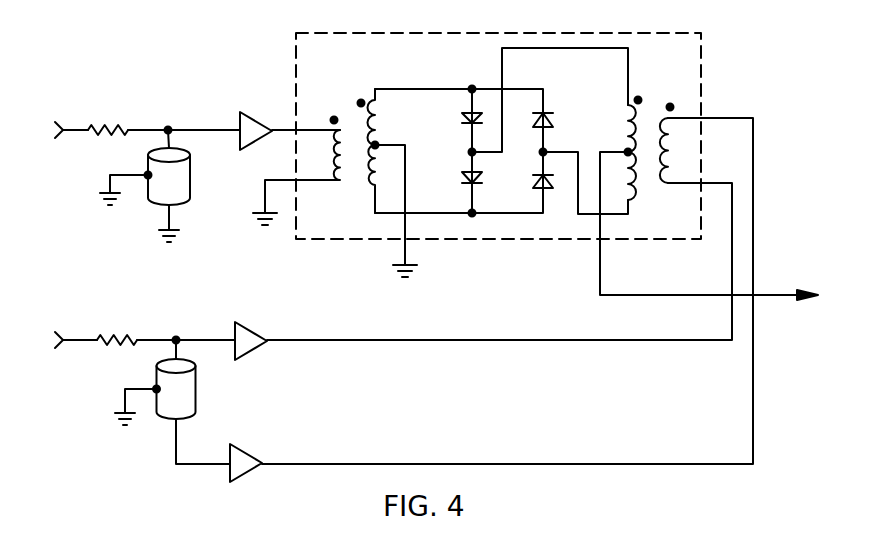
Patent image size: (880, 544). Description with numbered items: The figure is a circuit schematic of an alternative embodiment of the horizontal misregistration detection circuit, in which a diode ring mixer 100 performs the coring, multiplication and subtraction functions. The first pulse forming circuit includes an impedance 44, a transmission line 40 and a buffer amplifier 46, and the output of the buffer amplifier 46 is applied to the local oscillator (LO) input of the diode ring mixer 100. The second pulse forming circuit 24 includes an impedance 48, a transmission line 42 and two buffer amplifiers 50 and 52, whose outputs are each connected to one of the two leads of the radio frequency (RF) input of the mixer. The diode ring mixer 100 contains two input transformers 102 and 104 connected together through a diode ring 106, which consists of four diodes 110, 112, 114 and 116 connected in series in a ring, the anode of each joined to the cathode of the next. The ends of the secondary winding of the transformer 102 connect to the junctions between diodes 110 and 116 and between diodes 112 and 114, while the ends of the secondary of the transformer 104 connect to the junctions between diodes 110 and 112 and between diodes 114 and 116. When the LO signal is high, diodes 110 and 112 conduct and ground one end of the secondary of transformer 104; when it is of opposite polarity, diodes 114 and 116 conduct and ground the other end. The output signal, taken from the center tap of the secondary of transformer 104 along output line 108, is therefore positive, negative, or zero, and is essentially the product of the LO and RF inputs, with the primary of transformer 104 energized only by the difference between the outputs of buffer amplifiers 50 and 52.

The second pulse forming circuit 24 is at (325, 397).
The transmission line 40 is at (188, 183).
The transmission line 42 is at (192, 392).
The impedance 44 is at (120, 127).
The buffer amplifier 46 is at (254, 112).
The impedance 48 is at (124, 329).
The buffer amplifier 50 is at (260, 322).
The buffer amplifier 52 is at (246, 470).
The diode ring mixer 100 is at (702, 52).
The input transformer 102 is at (342, 98).
The input transformer 104 is at (654, 88).
The diode ring 106 is at (531, 84).
The output line 108 is at (668, 297).
The diode 110 is at (463, 119).
The diode 112 is at (463, 179).
The diode 114 is at (533, 183).
The diode 116 is at (555, 121).